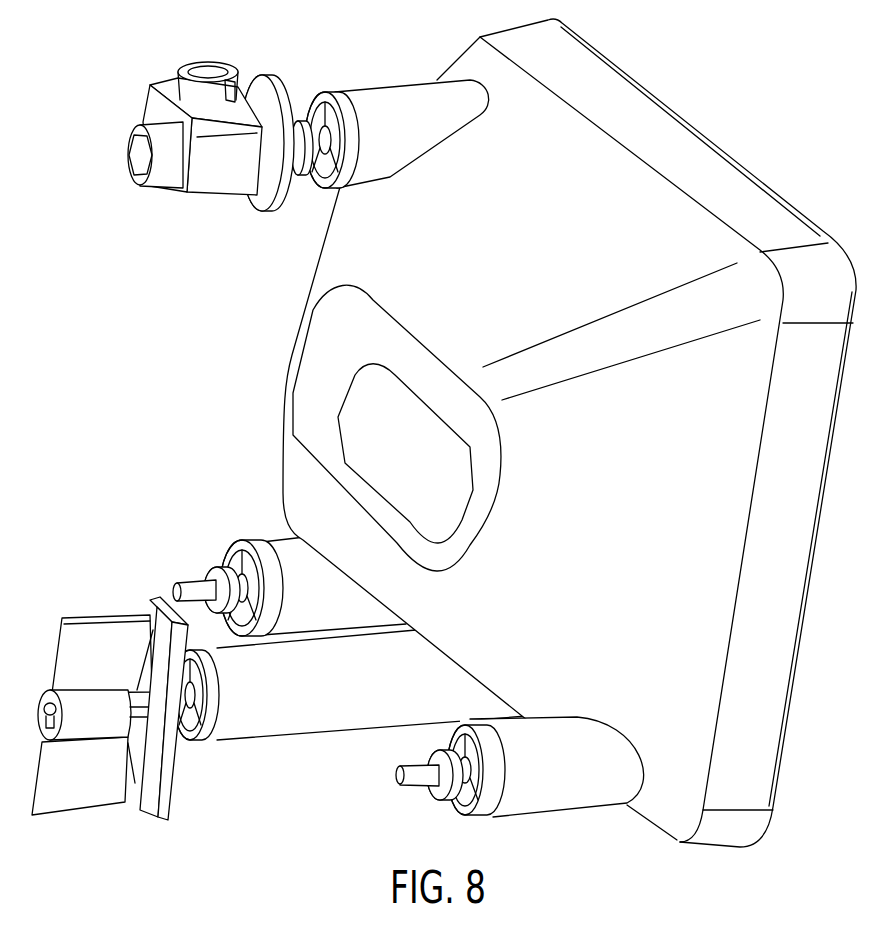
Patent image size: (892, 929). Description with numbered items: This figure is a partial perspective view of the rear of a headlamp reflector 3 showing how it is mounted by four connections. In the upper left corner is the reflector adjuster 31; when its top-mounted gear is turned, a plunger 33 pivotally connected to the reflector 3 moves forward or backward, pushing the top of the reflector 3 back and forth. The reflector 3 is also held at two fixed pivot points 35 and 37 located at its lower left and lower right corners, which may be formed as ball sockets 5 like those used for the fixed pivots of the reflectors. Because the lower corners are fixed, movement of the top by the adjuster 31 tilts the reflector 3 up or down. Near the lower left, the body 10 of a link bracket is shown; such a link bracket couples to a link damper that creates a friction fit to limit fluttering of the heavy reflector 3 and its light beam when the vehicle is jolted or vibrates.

The reflector 3 is at (323, 259).
The ball socket 5 is at (300, 722).
The body 10 is at (97, 635).
The reflector adjuster 31 is at (145, 79).
The plunger 33 is at (313, 108).
The fixed pivot point 35 is at (192, 588).
The fixed pivot point 37 is at (423, 782).